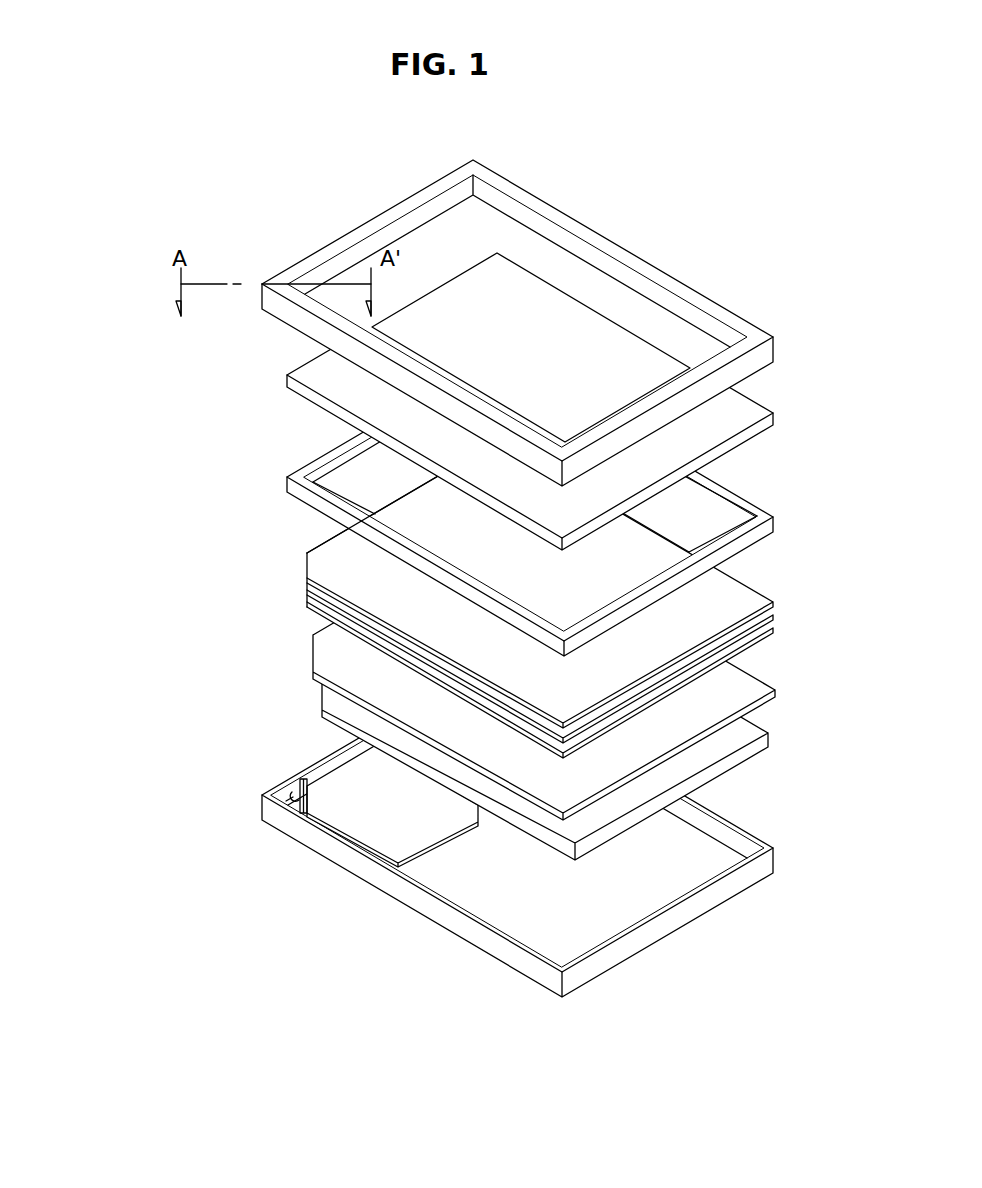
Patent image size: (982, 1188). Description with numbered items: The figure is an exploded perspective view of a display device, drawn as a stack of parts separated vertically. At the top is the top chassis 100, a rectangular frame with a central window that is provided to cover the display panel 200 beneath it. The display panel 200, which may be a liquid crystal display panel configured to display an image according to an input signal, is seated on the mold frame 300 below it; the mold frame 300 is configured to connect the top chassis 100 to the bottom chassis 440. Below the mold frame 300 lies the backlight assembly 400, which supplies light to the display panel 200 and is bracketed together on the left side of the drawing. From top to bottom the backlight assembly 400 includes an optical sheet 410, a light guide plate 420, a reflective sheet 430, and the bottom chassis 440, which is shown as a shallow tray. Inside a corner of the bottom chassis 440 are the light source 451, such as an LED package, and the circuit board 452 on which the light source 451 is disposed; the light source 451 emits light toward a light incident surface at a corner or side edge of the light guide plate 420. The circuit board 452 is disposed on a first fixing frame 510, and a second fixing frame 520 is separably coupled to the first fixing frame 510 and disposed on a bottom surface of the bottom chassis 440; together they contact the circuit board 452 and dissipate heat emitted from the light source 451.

The top chassis 100 is at (300, 322).
The display panel 200 is at (286, 378).
The mold frame 300 is at (287, 480).
The backlight assembly 400 is at (424, 719).
The optical sheet 410 is at (465, 599).
The light guide plate 420 is at (317, 653).
The reflective sheet 430 is at (327, 705).
The bottom chassis 440 is at (316, 836).
The light source 451 is at (306, 780).
The circuit board 452 is at (296, 794).
The first fixing frame 510 is at (293, 798).
The second fixing frame 520 is at (413, 832).